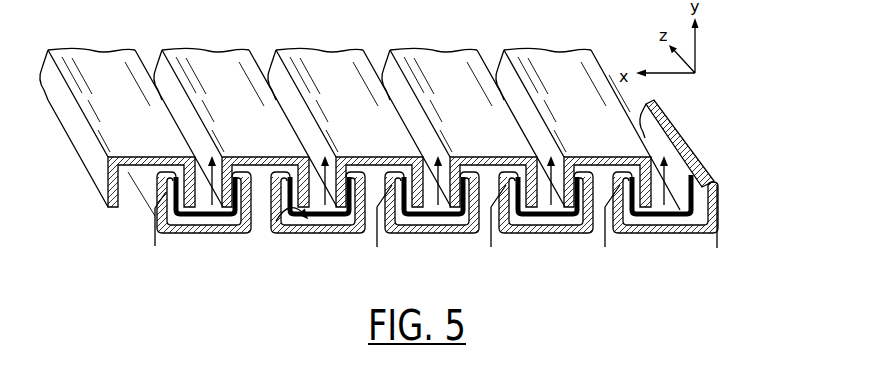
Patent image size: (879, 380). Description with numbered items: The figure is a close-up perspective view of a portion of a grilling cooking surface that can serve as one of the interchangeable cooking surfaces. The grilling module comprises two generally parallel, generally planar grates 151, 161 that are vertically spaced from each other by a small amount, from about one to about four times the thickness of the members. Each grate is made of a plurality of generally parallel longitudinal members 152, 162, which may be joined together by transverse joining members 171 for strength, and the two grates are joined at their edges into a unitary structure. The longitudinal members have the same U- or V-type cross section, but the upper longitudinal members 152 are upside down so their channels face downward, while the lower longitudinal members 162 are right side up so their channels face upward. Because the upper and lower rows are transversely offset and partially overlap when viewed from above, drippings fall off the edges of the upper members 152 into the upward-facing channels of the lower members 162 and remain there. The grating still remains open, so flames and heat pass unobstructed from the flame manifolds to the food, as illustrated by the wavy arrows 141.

The longitudinal members of the top grate 152 is at (555, 63).
The longitudinal members of the bottom grate 162 is at (671, 259).
The wavy arrows 141 is at (730, 256).
The transverse joining members 171 is at (288, 208).
The first grate 151 is at (623, 93).
The second grate 161 is at (706, 167).